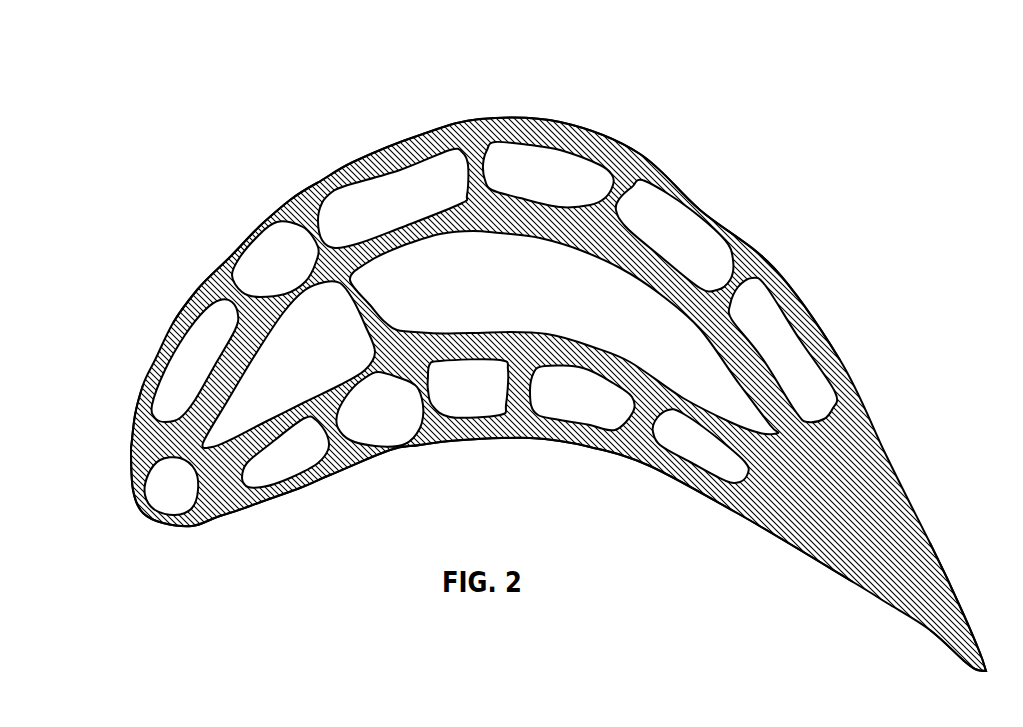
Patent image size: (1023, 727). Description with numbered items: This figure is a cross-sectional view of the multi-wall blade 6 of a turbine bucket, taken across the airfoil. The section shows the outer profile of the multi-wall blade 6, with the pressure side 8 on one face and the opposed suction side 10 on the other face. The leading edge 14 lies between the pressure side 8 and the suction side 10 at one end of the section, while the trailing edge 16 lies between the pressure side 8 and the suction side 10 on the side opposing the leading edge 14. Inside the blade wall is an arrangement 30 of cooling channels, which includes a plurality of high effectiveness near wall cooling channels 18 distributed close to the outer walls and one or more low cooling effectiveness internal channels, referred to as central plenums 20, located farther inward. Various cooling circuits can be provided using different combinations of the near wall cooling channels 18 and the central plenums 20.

The multi-wall blade 6 is at (807, 76).
The pressure side 8 is at (443, 475).
The suction side 10 is at (511, 76).
The leading edge 14 is at (118, 525).
The trailing edge 16 is at (933, 674).
The near wall cooling channels 18 is at (181, 500).
The central plenums 20 is at (281, 383).
The arrangement of cooling channels 30 is at (289, 200).